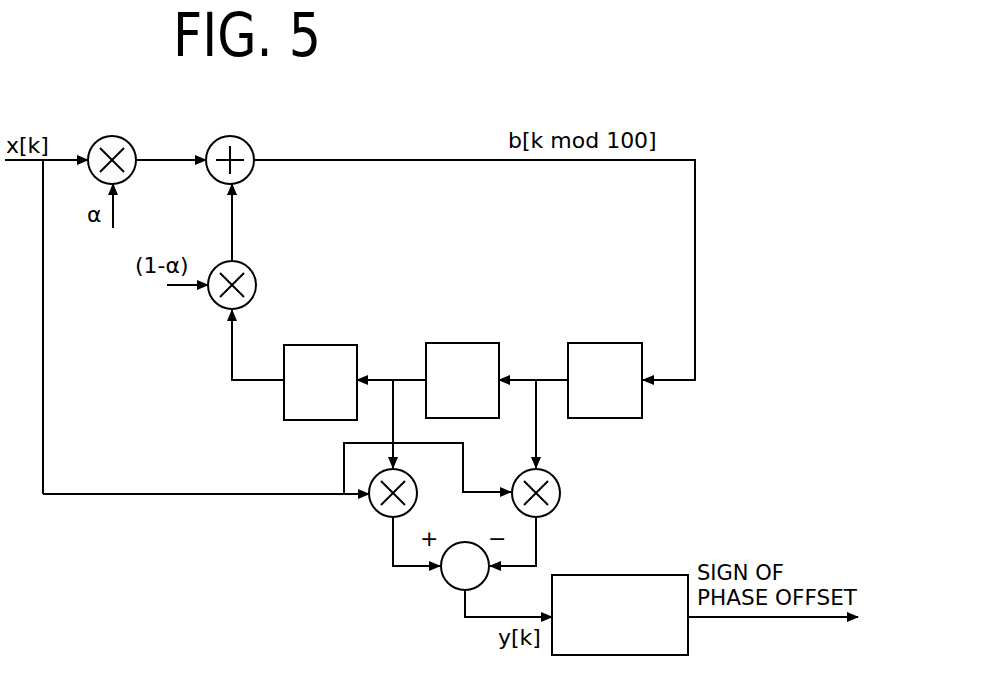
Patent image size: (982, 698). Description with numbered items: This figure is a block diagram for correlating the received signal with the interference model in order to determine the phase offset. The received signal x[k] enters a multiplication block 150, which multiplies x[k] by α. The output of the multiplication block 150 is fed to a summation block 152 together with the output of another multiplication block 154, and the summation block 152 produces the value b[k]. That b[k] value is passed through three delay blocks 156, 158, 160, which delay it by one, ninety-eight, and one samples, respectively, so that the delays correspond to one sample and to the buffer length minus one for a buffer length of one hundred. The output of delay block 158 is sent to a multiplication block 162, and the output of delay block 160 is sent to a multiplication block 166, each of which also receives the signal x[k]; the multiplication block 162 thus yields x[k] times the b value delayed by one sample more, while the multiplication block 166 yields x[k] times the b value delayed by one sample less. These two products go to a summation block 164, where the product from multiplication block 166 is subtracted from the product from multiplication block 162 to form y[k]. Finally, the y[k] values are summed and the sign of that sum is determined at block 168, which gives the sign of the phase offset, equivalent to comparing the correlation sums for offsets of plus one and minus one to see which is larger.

The multiplication block 150 is at (131, 140).
The summation block 152 is at (249, 145).
The multiplication block 154 is at (251, 266).
The delay block 156 is at (321, 345).
The delay block 158 is at (465, 343).
The delay block 160 is at (625, 343).
The multiplication block 162 is at (374, 512).
The summation block 164 is at (448, 582).
The multiplication block 166 is at (560, 493).
The sign determination block 168 is at (654, 655).